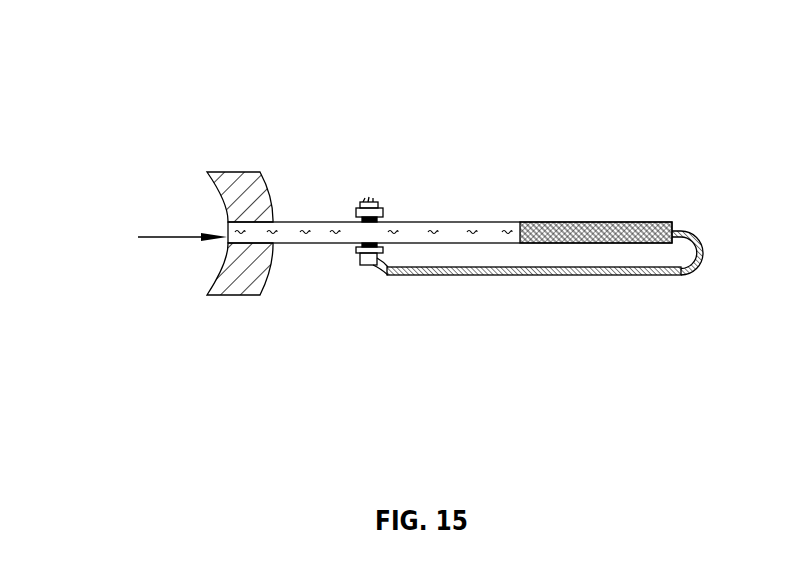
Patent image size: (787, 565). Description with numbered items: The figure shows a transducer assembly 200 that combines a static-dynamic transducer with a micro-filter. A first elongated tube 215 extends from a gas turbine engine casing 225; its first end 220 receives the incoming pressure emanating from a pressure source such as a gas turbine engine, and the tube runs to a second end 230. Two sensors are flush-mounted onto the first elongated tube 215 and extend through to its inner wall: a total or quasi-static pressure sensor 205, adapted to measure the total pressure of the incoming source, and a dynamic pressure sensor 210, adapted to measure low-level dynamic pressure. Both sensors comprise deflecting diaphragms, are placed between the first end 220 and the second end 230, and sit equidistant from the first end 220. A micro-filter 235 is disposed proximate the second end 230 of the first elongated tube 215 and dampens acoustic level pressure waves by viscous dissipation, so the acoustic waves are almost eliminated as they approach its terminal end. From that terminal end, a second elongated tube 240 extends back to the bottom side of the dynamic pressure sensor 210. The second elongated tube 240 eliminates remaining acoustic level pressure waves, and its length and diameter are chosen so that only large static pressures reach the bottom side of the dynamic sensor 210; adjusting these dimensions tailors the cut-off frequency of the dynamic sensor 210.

The transducer assembly 200 is at (97, 97).
The total pressure sensor 205 is at (446, 173).
The dynamic pressure sensor 210 is at (386, 348).
The first elongated tube 215 is at (450, 202).
The first end 220 is at (123, 280).
The gas turbine engine casing 225 is at (270, 177).
The second end 230 is at (596, 212).
The micro-filter 235 is at (715, 224).
The second elongated tube 240 is at (563, 303).